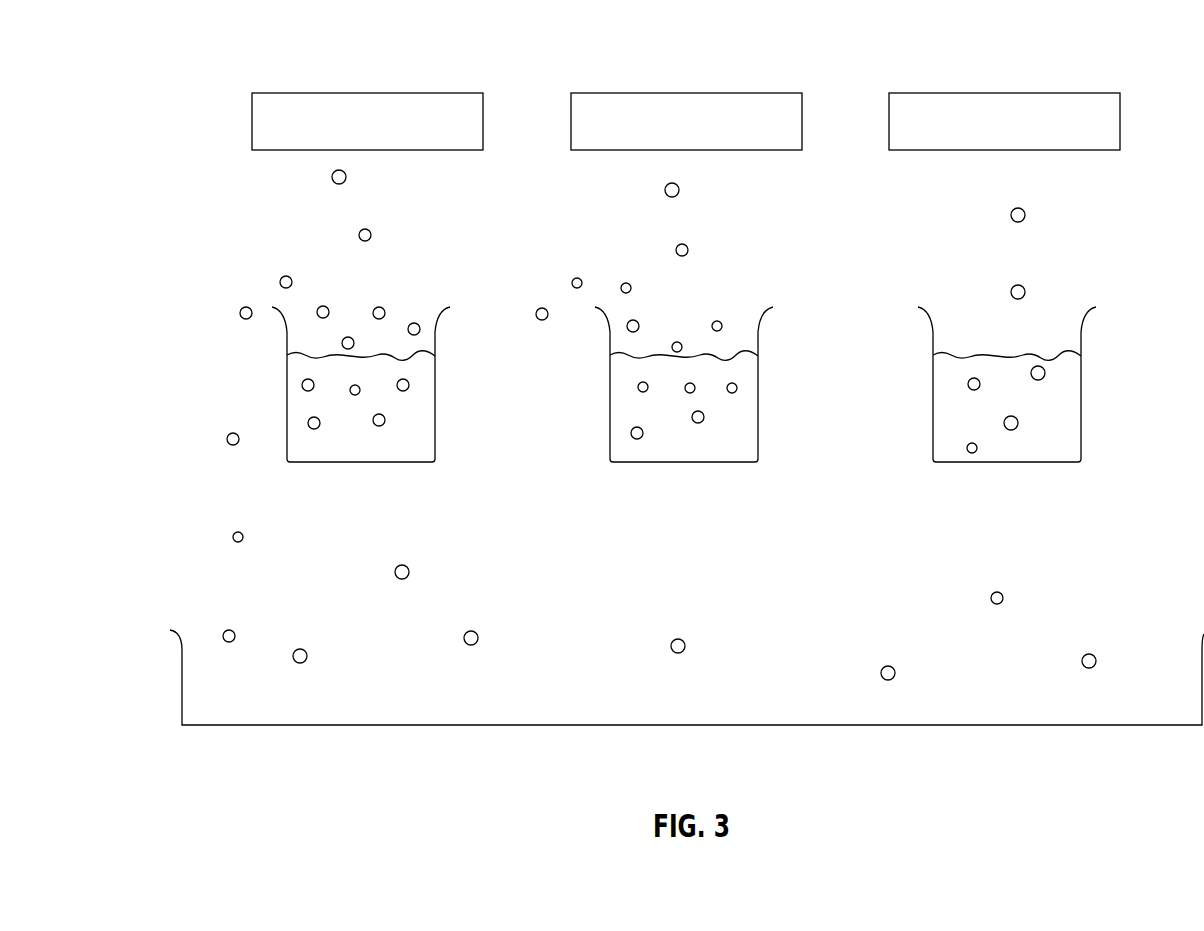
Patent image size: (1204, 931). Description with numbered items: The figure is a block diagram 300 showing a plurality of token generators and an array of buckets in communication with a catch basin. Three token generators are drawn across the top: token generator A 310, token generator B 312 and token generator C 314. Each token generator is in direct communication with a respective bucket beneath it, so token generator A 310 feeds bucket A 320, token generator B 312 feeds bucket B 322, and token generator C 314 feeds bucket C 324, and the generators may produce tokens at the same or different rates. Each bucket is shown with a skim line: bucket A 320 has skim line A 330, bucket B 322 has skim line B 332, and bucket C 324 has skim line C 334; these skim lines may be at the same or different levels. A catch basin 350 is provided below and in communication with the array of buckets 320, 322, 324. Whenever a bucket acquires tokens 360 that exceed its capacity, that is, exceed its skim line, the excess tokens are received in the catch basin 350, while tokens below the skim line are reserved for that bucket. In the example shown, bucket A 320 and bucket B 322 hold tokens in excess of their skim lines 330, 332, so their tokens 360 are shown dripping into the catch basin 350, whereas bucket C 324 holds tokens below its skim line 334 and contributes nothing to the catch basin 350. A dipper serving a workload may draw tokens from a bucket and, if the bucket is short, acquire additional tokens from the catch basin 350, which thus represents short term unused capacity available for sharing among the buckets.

The block diagram 300 is at (705, 26).
The token generator A 310 is at (450, 93).
The token generator B 312 is at (765, 93).
The token generator C 314 is at (1083, 93).
The bucket A 320 is at (435, 400).
The bucket B 322 is at (759, 400).
The bucket C 324 is at (1082, 400).
The skim line A 330 is at (388, 355).
The skim line B 332 is at (732, 355).
The skim line C 334 is at (1042, 355).
The catch basin 350 is at (182, 686).
The tokens 360 is at (469, 645).